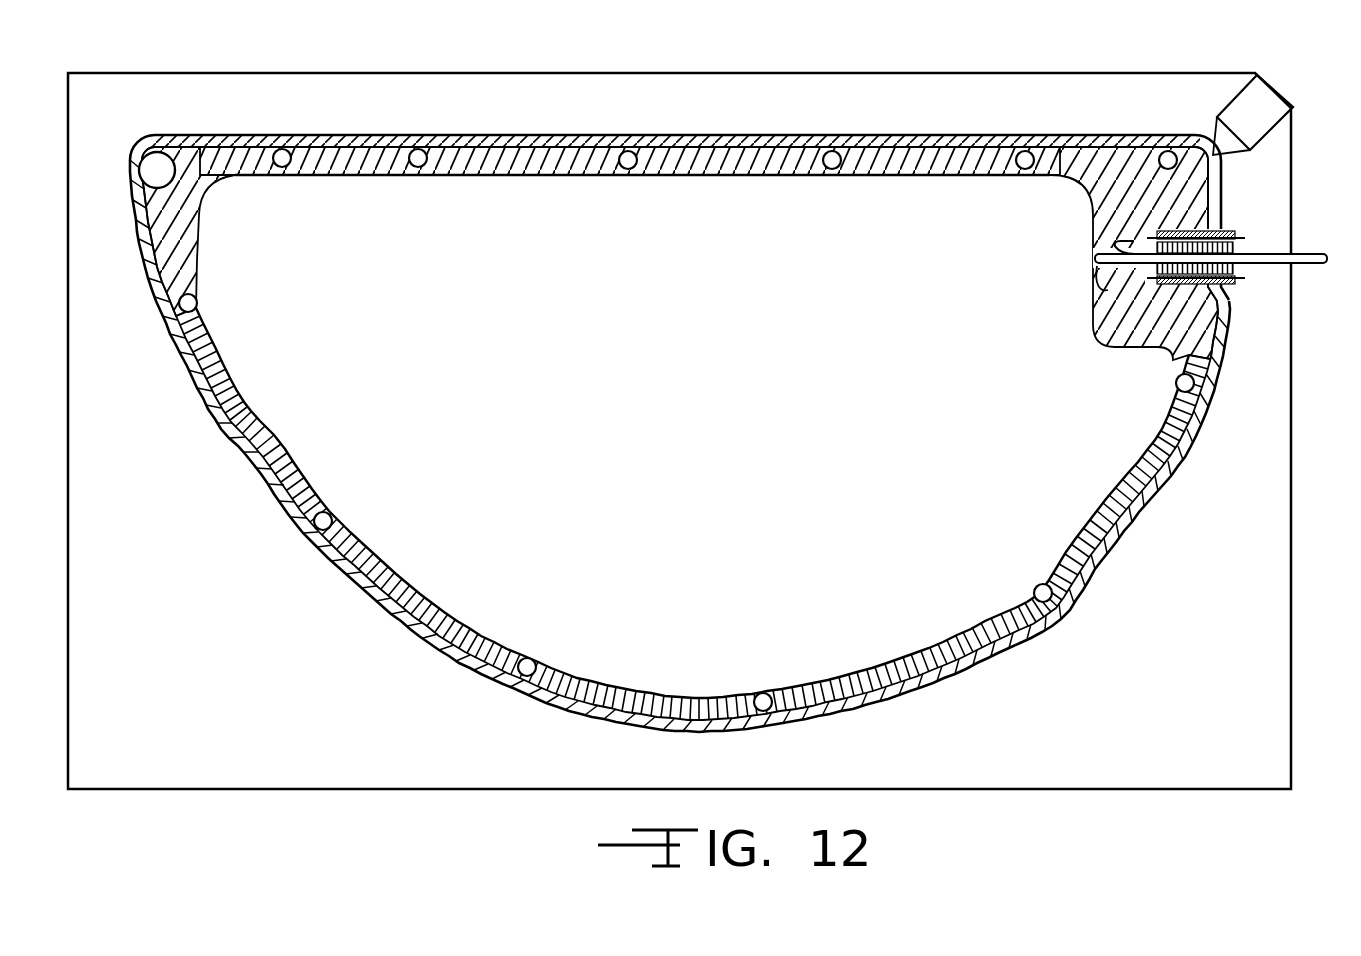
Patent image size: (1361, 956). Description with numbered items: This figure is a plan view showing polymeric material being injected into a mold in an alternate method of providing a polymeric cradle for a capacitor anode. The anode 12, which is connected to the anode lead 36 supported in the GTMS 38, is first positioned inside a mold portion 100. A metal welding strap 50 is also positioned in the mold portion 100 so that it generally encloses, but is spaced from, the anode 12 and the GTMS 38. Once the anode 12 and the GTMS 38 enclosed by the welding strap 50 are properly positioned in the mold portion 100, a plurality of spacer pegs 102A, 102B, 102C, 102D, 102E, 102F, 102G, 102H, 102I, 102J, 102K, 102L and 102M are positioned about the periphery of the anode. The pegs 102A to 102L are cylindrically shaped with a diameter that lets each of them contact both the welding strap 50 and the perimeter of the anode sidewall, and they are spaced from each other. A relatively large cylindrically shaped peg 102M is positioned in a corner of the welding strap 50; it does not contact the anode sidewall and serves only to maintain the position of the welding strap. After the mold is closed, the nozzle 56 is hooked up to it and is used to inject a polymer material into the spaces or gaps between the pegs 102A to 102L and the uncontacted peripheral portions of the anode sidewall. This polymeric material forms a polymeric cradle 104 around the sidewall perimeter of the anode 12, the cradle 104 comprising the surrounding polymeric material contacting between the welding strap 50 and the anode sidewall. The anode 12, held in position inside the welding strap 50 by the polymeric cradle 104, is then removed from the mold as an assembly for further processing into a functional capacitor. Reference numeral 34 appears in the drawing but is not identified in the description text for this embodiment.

The mold portion 100 is at (873, 90).
The anode 12 is at (1090, 497).
The metal welding strap 50 is at (693, 409).
The polymeric cradle 104 is at (722, 162).
The spacer peg 102A is at (1167, 151).
The spacer peg 102B is at (1027, 151).
The spacer peg 102C is at (828, 151).
The spacer peg 102D is at (630, 152).
The spacer peg 102E is at (420, 151).
The spacer peg 102F is at (282, 152).
The spacer peg 102G is at (185, 306).
The spacer peg 102H is at (322, 523).
The spacer peg 102I is at (527, 670).
The spacer peg 102J is at (764, 707).
The spacer peg 102K is at (1046, 600).
The spacer peg 102L is at (1192, 386).
The spacer peg 102M is at (160, 160).
The nozzle 56 is at (1257, 110).
The GTMS 38 is at (1258, 243).
The anode lead 36 is at (1312, 254).
The pin aperture 34 is at (1100, 288).